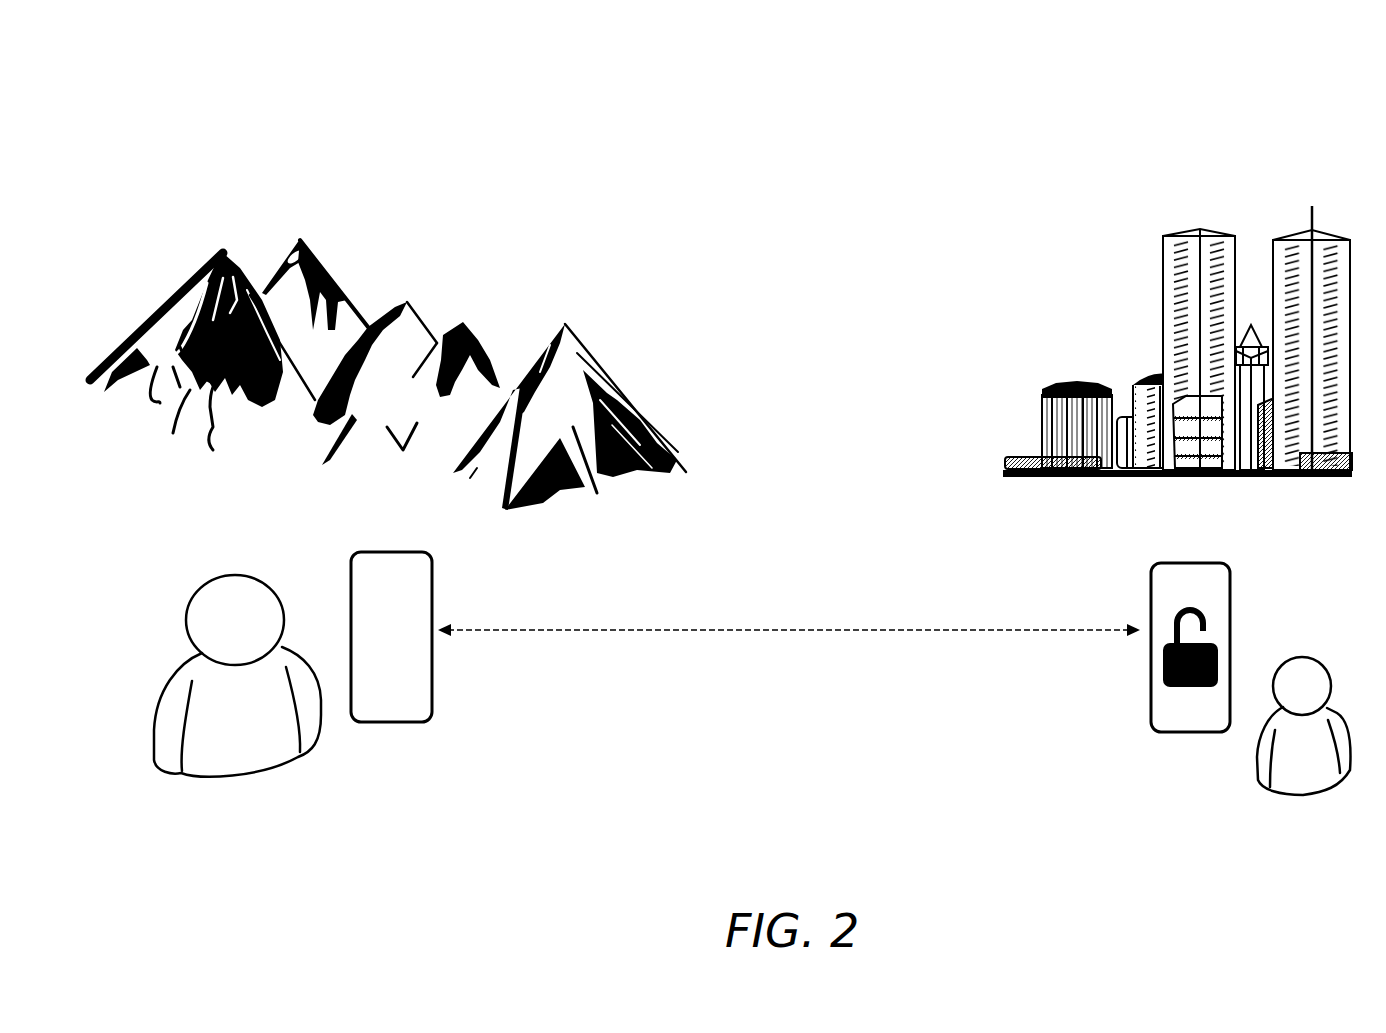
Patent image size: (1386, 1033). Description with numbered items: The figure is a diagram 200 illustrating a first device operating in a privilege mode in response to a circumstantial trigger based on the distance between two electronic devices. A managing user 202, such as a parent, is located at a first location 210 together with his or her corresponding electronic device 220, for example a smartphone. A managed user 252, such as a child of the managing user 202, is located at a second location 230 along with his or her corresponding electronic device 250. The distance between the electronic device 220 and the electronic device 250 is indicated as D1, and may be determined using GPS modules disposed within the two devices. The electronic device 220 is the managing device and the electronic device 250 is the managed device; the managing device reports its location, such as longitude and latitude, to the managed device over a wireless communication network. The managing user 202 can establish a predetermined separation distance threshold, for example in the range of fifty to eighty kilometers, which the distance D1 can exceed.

The diagram 200 is at (249, 60).
The managing user 202 is at (218, 625).
The first location 210 is at (266, 248).
The electronic device 220 is at (365, 592).
The second location 230 is at (1204, 207).
The electronic device 250 is at (1158, 578).
The managed user 252 is at (1270, 768).
The distance D1 is at (808, 630).